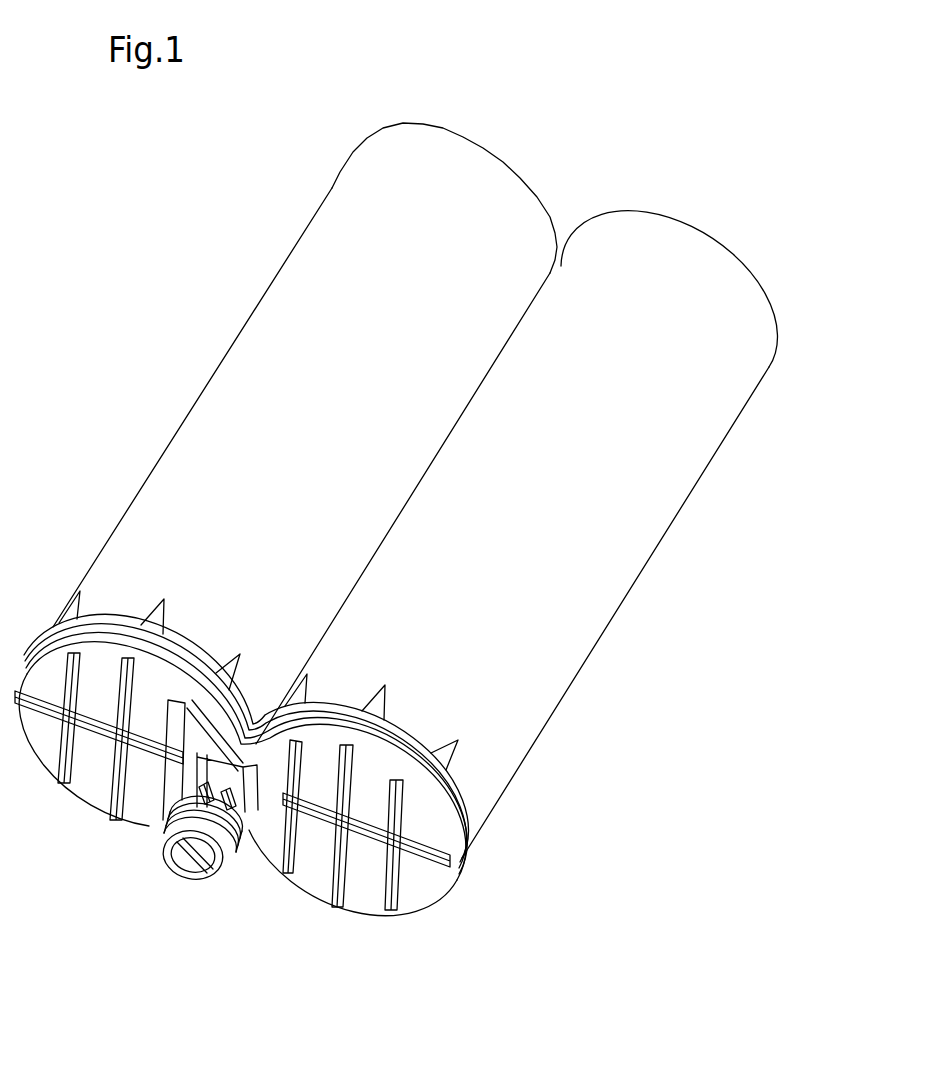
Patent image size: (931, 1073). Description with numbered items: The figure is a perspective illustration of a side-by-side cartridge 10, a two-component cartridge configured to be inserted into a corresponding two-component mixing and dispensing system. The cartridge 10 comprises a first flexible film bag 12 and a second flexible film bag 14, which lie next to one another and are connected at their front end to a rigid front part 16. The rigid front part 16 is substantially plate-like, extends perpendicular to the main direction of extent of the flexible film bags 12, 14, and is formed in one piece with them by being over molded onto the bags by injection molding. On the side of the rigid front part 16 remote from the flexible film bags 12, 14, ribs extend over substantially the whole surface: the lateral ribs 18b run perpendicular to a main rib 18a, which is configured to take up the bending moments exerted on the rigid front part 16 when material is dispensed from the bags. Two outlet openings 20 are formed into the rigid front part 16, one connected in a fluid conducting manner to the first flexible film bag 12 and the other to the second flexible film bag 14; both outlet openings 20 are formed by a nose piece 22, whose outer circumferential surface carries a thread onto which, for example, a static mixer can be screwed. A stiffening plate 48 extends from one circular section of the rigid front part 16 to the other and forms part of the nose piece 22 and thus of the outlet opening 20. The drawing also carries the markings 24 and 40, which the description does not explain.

The side-by-side cartridge 10 is at (705, 143).
The first flexible film bag 12 is at (600, 593).
The second flexible film bag 14 is at (215, 410).
The rigid front part 16 is at (370, 897).
The main rib 18a is at (437, 867).
The lateral ribs 18b is at (333, 883).
The outlet openings 20 is at (170, 857).
The nose piece 22 is at (212, 877).
The outlet connector 24 is at (175, 812).
The viewing direction arrow 40 is at (788, 348).
The stiffening plate 48 is at (180, 755).